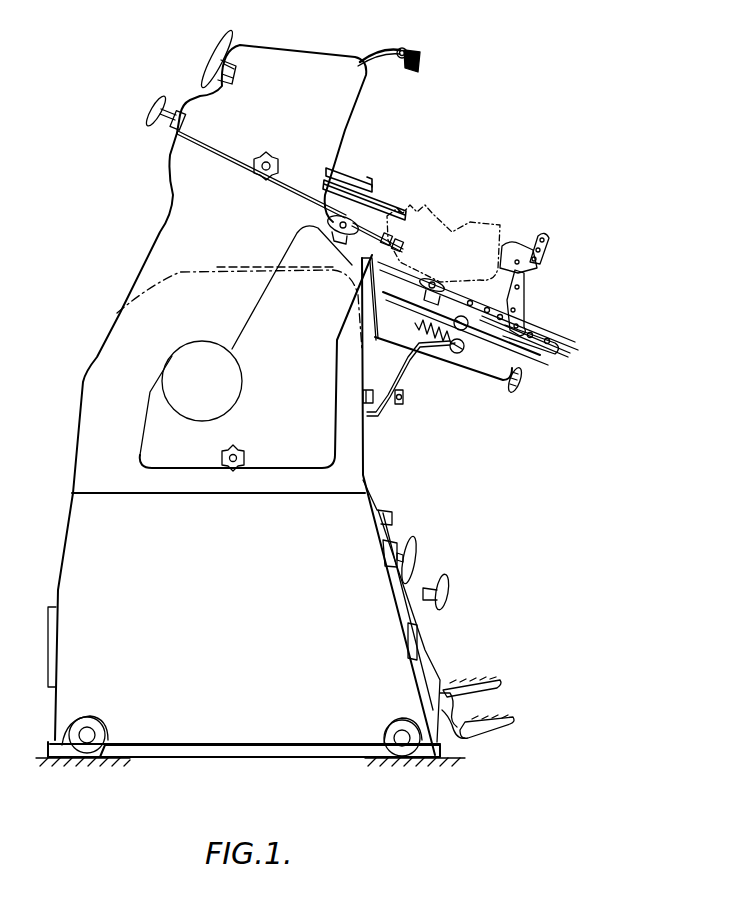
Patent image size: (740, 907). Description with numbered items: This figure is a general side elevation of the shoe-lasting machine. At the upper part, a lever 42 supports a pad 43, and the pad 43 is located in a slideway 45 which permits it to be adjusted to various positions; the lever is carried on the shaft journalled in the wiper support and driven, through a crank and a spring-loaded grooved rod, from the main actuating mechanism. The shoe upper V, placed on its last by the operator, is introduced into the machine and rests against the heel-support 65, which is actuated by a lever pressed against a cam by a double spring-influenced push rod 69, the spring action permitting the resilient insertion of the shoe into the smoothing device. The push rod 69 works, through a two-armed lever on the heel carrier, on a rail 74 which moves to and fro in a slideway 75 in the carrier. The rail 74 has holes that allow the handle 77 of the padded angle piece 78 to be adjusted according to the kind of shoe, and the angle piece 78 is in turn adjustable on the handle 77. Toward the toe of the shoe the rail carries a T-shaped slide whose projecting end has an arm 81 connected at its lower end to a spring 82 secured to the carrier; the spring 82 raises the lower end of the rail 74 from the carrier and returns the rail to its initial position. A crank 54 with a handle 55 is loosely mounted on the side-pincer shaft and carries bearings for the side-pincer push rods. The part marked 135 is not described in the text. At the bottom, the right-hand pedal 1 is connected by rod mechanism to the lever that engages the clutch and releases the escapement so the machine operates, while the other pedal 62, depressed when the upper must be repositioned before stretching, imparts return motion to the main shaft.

The lever 42 is at (372, 68).
The pad 43 is at (422, 62).
The slideway 45 is at (410, 52).
The shoe upper V is at (436, 214).
The padded angle piece 78 is at (509, 250).
The handle 77 is at (548, 246).
The heel-support 65 is at (513, 313).
The rail 74 is at (557, 347).
The slideway 75 is at (545, 350).
The arm 81 is at (530, 380).
The spring 82 is at (430, 342).
The handle 55 is at (462, 352).
The push rod 69 is at (407, 414).
The pivot clamp 135 is at (410, 318).
The crank 54 is at (369, 420).
The pedal 62 is at (488, 678).
The right-hand pedal 1 is at (480, 726).